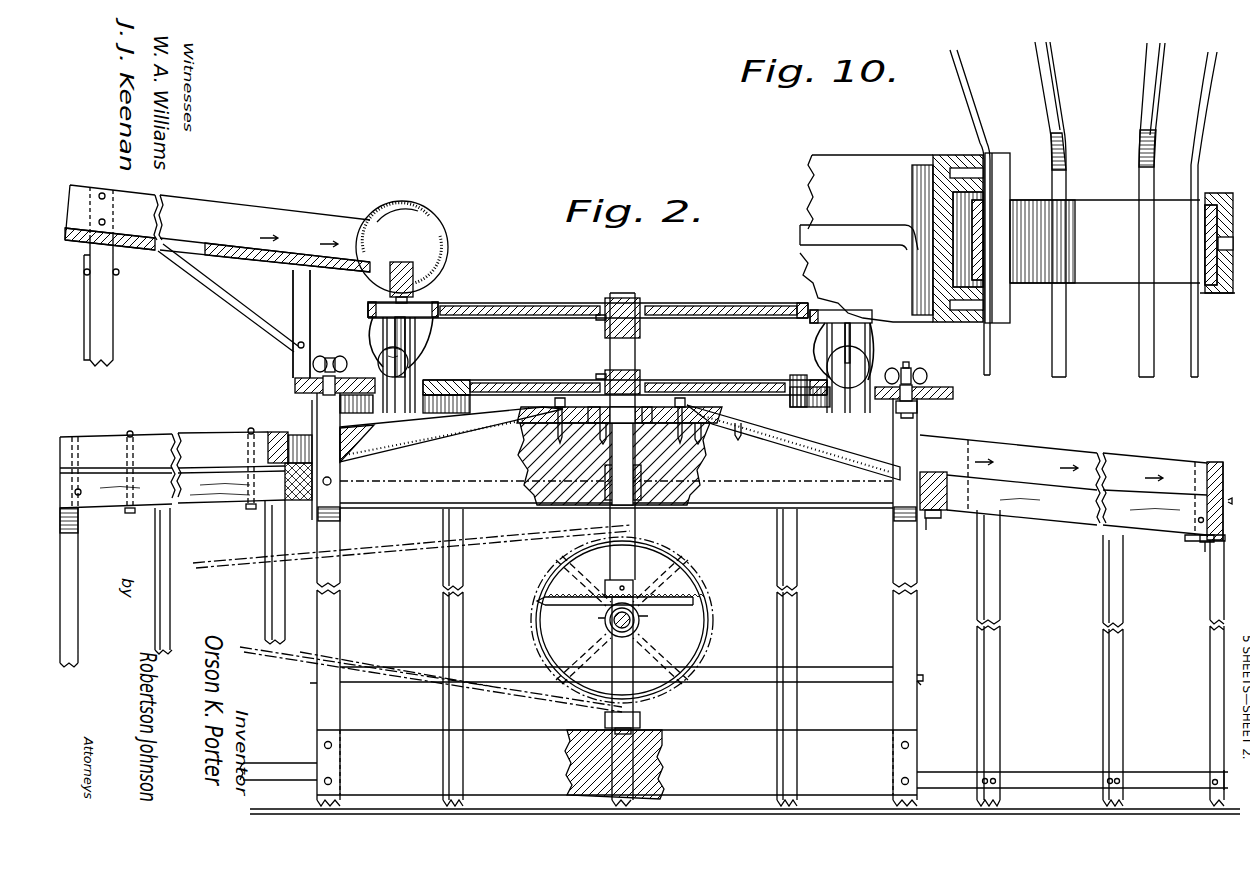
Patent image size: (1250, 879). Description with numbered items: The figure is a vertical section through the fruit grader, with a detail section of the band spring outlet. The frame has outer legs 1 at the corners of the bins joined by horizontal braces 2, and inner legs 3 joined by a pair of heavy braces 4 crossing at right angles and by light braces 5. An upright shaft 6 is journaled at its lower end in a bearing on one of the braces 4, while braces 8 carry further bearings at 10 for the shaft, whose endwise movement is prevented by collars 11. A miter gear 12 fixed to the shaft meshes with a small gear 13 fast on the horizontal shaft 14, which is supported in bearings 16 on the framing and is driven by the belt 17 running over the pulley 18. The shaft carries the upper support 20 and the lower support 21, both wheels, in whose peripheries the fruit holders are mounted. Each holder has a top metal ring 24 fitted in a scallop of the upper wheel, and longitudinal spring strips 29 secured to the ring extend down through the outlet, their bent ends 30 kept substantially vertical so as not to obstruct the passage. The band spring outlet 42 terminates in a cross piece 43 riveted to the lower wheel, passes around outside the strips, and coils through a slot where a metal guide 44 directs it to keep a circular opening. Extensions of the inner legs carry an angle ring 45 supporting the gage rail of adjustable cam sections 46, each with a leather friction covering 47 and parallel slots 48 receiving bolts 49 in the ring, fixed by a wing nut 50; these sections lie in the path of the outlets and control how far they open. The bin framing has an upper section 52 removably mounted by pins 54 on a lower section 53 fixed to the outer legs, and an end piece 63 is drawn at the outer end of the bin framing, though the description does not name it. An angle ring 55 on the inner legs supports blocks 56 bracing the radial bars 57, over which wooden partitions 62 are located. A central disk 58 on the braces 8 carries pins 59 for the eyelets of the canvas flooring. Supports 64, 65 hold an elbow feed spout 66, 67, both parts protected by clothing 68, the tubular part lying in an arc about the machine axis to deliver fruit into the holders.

In FIG. 2, the outer legs 1 is at (990, 696).
In FIG. 2, the horizontal braces 2 is at (1143, 782).
In FIG. 2, the inner legs 3 is at (905, 641).
In FIG. 2, the heavy braces 4 is at (712, 738).
In FIG. 2, the light braces 5 is at (790, 676).
In FIG. 2, the upright shaft 6 is at (635, 538).
In FIG. 2, the braces 8 is at (740, 462).
In FIG. 2, the bearing 10 is at (650, 410).
In FIG. 2, the collars 11 is at (640, 405).
In FIG. 2, the miter gear 12 is at (700, 600).
In FIG. 2, the small gear 13 is at (604, 622).
In FIG. 2, the shaft 14 is at (639, 620).
In FIG. 2, the bearing 16 is at (633, 650).
In FIG. 2, the belt 17 is at (226, 572).
In FIG. 2, the pulley 18 is at (545, 601).
In FIG. 2, the upper support 20 is at (455, 308).
In FIG. 2, the lower support 21 is at (480, 382).
In FIG. 10, the lower support 21 is at (955, 160).
In FIG. 2, the top metal ring 24 is at (378, 302).
In FIG. 2, the spring strips 29 is at (370, 333).
In FIG. 10, the spring strips 29 is at (1062, 135).
In FIG. 10, the ends 30 is at (1139, 304).
In FIG. 2, the band spring outlet 42 is at (812, 382).
In FIG. 10, the band spring outlet 42 is at (1105, 241).
In FIG. 2, the cross piece 43 is at (418, 385).
In FIG. 10, the cross piece 43 is at (990, 285).
In FIG. 10, the metal guide 44 is at (953, 225).
In FIG. 2, the angle ring 45 is at (918, 406).
In FIG. 2, the cam sections 46 is at (935, 388).
In FIG. 10, the cam sections 46 is at (1228, 296).
In FIG. 10, the friction covering 47 is at (1228, 193).
In FIG. 2, the parallel slots 48 is at (850, 433).
In FIG. 2, the bolts 49 is at (912, 368).
In FIG. 2, the wing nut 50 is at (915, 378).
In FIG. 2, the upper section 52 is at (1228, 462).
In FIG. 2, the lower section 53 is at (1208, 543).
In FIG. 2, the pins 54 is at (1200, 514).
In FIG. 2, the angle ring 55 is at (930, 520).
In FIG. 2, the blocks 56 is at (273, 515).
In FIG. 2, the radial bars 57 is at (222, 502).
In FIG. 2, the central disk 58 is at (586, 407).
In FIG. 2, the pins 59 is at (558, 398).
In FIG. 2, the wooden partitions 62 is at (230, 446).
In FIG. 2, the end piece 63 is at (1225, 462).
In FIG. 2, the supports 64 is at (113, 320).
In FIG. 2, the supports 65 is at (298, 315).
In FIG. 2, the elbow feed spout part 66 is at (290, 245).
In FIG. 2, the feed spout tube 67 is at (420, 206).
In FIG. 2, the clothing 68 is at (448, 258).